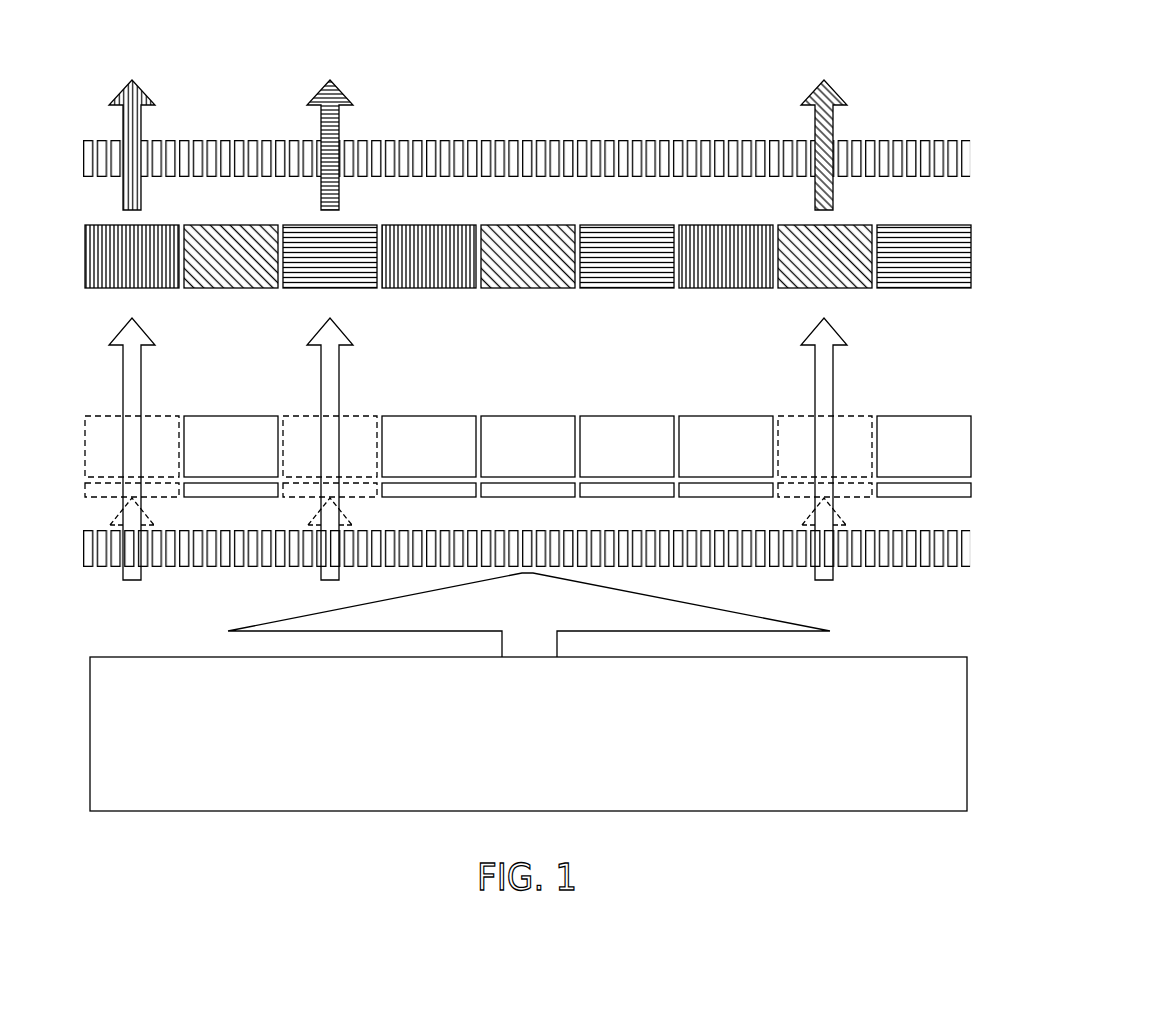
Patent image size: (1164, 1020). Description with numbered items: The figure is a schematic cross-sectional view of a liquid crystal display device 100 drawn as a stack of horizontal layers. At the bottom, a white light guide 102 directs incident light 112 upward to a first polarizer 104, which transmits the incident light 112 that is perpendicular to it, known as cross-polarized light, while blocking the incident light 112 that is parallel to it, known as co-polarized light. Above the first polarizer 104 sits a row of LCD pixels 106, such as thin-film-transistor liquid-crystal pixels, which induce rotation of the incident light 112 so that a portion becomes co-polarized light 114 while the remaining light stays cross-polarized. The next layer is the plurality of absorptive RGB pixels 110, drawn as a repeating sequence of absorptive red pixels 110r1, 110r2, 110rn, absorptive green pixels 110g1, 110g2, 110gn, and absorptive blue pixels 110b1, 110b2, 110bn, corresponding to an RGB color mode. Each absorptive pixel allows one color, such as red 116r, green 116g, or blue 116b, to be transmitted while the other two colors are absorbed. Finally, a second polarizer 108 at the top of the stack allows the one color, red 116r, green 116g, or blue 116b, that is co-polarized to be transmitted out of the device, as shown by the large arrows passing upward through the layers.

The liquid crystal display device 100 is at (1020, 72).
The white light guide 102 is at (968, 763).
The first polarizer 104 is at (970, 547).
The LCD pixels 106 is at (970, 443).
The second polarizer 108 is at (970, 152).
The absorptive RGB pixels 110 is at (620, 284).
The first absorptive red pixel 110r1 is at (140, 280).
The first absorptive green pixel 110g1 is at (218, 280).
The first absorptive blue pixel 110b1 is at (340, 280).
The second absorptive red pixel 110r2 is at (420, 280).
The second absorptive green pixel 110g2 is at (520, 280).
The second absorptive blue pixel 110b2 is at (617, 280).
The Nth absorptive red pixel 110rn is at (705, 280).
The Nth absorptive green pixel 110gn is at (840, 280).
The Nth absorptive blue pixel 110bn is at (933, 280).
The incident light 112 is at (846, 522).
The co-polarized light 114 is at (833, 385).
The red light 116r is at (152, 96).
The blue light 116b is at (350, 100).
The green light 116g is at (845, 100).